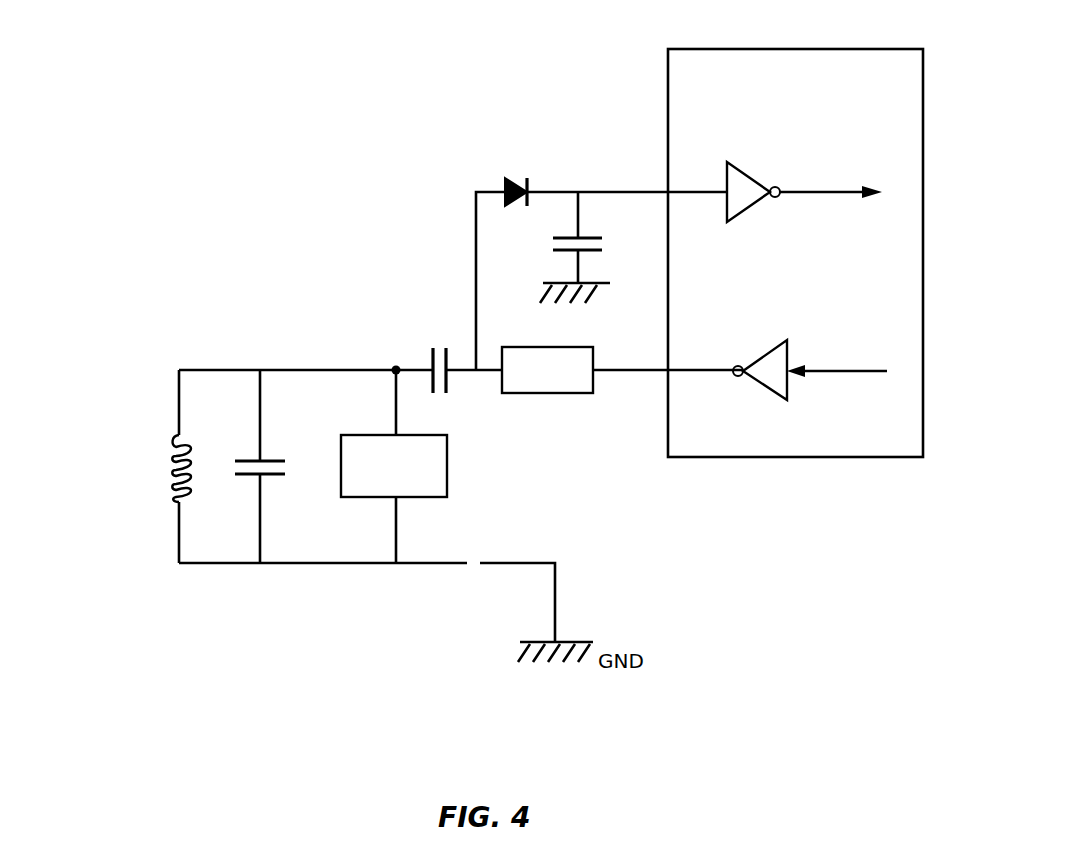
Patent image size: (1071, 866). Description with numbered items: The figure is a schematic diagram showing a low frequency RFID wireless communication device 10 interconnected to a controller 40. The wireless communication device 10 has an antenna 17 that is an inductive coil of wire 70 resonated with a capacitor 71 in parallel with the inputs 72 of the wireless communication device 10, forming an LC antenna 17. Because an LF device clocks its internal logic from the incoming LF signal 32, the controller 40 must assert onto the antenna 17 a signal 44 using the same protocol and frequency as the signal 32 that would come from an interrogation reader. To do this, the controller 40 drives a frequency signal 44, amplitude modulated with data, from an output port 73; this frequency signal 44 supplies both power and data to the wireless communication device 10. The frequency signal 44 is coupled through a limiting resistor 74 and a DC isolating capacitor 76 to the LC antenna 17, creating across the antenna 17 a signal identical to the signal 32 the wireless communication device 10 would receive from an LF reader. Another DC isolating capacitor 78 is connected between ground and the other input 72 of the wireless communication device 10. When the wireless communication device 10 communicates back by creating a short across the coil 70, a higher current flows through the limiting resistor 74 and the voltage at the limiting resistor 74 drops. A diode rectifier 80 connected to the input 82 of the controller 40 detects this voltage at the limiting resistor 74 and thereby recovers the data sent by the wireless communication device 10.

The wireless communication device 10 is at (408, 478).
The antenna 17 is at (230, 357).
The incoming LF signal 32 is at (150, 475).
The controller 40 is at (815, 121).
The frequency signal 44 is at (648, 373).
The inductive coil of wire 70 is at (168, 492).
The capacitor 71 is at (268, 477).
The inputs 72 is at (393, 365).
The output port 73 is at (681, 373).
The limiting resistor 74 is at (560, 381).
The DC isolating capacitor 76 is at (432, 353).
The DC isolating capacitor 78 is at (585, 236).
The diode rectifier 80 is at (502, 188).
The input 82 is at (685, 190).